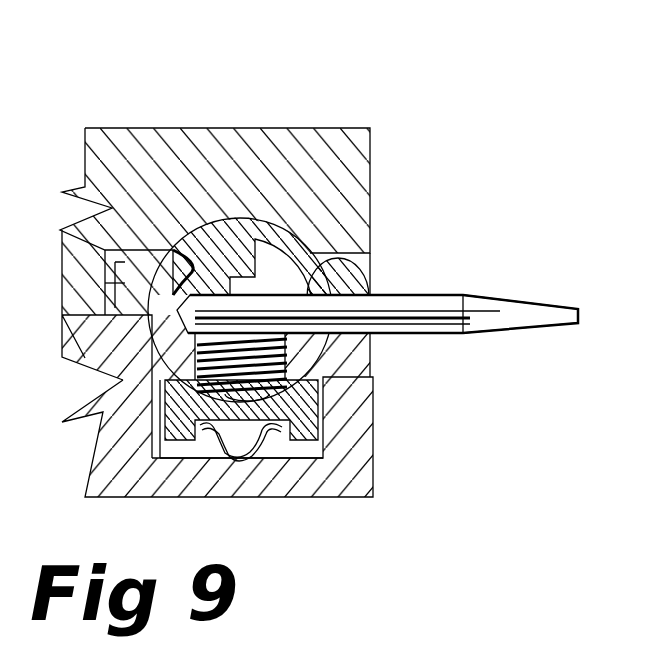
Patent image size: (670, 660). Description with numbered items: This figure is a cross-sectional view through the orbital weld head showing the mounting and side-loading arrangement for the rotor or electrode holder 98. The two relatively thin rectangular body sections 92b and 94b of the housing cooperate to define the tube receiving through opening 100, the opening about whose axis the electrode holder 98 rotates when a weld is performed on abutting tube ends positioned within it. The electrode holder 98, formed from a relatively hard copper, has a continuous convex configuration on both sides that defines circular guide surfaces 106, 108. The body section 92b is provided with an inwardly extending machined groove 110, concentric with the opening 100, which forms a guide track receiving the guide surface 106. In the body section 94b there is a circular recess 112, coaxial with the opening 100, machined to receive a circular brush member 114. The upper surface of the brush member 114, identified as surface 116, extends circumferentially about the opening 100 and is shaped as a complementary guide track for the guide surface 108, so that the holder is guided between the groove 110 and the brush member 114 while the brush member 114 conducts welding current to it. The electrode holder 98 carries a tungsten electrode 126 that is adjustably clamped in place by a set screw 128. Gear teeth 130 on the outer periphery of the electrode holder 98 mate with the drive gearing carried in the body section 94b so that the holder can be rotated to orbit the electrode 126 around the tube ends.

The tube receiving through opening 100 is at (513, 158).
The body section 92b is at (371, 172).
The body section 94b is at (375, 447).
The electrode holder 98 is at (397, 269).
The guide surface 106 is at (236, 216).
The guide surface 108 is at (165, 381).
The machined groove 110 is at (172, 266).
The circular recess 112 is at (182, 455).
The brush member 114 is at (147, 500).
The guide track surface 116 is at (270, 420).
The tungsten electrode 126 is at (437, 334).
The set screw 128 is at (283, 358).
The gear teeth 130 is at (125, 290).